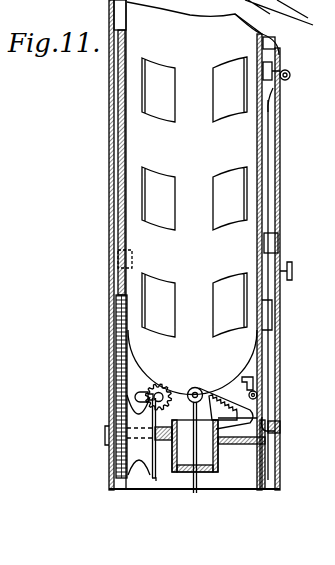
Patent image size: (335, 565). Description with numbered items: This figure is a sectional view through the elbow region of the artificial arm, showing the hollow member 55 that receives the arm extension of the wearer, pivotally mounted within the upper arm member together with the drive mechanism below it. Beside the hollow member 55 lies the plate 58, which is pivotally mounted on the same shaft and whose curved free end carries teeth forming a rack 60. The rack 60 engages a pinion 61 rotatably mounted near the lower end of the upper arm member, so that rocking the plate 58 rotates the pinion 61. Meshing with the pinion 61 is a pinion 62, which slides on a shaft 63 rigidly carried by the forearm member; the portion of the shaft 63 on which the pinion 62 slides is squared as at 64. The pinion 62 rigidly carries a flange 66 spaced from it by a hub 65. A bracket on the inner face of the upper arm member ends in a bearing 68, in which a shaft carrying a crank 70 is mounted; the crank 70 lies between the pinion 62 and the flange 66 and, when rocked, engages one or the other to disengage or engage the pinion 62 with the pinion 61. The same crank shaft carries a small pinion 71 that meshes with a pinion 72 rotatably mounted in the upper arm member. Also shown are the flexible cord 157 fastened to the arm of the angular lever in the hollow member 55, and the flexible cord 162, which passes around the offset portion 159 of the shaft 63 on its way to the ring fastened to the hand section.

The hollow member 55 is at (223, 155).
The plate 58 is at (120, 170).
The rack 60 is at (113, 353).
The pinion 61 is at (115, 397).
The pinion 62 is at (108, 433).
The shaft 63 is at (253, 433).
The squared portion 64 is at (196, 388).
The hub 65 is at (135, 445).
The flange 66 is at (156, 472).
The bearing 68 is at (165, 428).
The crank 70 is at (138, 395).
The small pinion 71 is at (155, 384).
The pinion 72 is at (258, 392).
The flexible cord 157 is at (257, 452).
The offset portion 159 is at (267, 468).
The flexible cord 162 is at (200, 482).